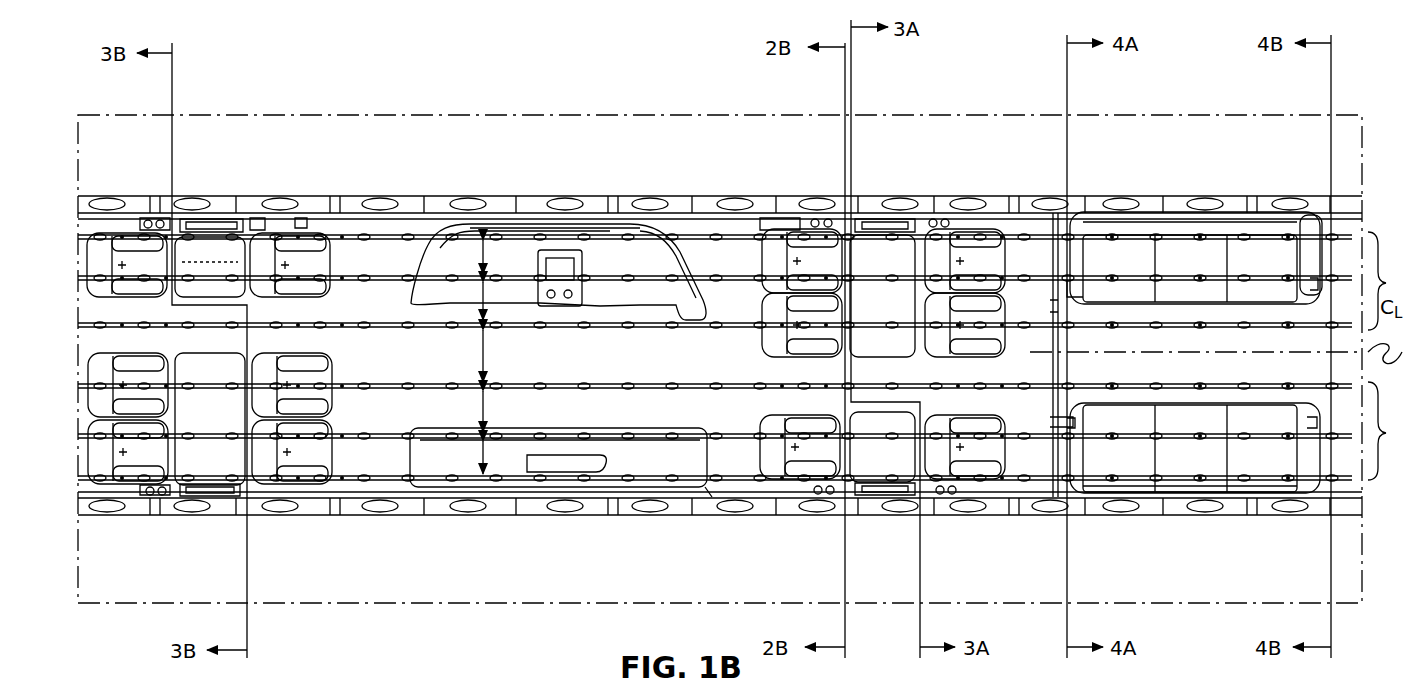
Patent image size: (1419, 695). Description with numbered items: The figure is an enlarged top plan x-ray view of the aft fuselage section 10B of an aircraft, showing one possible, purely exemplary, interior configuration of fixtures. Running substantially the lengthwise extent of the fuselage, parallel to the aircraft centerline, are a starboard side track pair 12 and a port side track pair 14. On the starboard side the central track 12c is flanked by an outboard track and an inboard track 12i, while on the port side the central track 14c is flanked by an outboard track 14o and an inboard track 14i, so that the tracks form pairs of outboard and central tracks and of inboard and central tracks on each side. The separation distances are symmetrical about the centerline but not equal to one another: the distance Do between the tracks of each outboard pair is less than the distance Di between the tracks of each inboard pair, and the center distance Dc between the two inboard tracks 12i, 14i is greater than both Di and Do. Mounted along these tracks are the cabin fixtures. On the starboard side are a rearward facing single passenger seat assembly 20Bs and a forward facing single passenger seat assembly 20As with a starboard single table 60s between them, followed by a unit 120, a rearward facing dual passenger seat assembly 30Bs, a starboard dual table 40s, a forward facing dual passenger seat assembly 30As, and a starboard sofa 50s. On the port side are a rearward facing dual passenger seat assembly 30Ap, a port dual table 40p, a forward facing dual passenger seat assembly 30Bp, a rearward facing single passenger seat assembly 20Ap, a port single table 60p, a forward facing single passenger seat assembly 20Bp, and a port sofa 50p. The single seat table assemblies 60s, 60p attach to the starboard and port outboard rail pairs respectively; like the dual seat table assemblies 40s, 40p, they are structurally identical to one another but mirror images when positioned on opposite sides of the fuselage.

The aft fuselage section 10B is at (482, 522).
The starboard side track pair 12 is at (746, 281).
The central track 12c is at (1215, 275).
The inboard track 12i is at (370, 328).
The port side track pair 14 is at (1391, 431).
The inboard track 14i is at (658, 382).
The central track 14c is at (588, 438).
The outboard track 14o is at (372, 482).
The rearward facing starboard side single passenger seat assembly 20Bs is at (100, 258).
The forward facing starboard side single passenger seat assembly 20As is at (322, 258).
The starboard side single table 60s is at (228, 268).
The lounge / divan unit 120 is at (567, 238).
The rearward facing starboard side dual passenger seat assembly 30Bs is at (798, 290).
The starboard side dual table 40s is at (893, 309).
The forward facing starboard side dual passenger seat assembly 30As is at (962, 292).
The starboard side sofa 50s is at (1190, 292).
The rearward facing port side dual passenger seat assembly 30Ap is at (134, 418).
The port side dual table 40p is at (224, 419).
The forward facing port side dual passenger seat assembly 30Bp is at (285, 420).
The rearward facing port side single passenger seat assembly 20Ap is at (762, 450).
The port side single table 60p is at (891, 460).
The forward facing port side single passenger seat assembly 20Bp is at (1000, 452).
The port side sofa 50p is at (1195, 454).
The outboard track pair separation distance Do is at (501, 357).
The inboard track pair separation distance Di is at (498, 357).
The center distance Dc is at (500, 356).